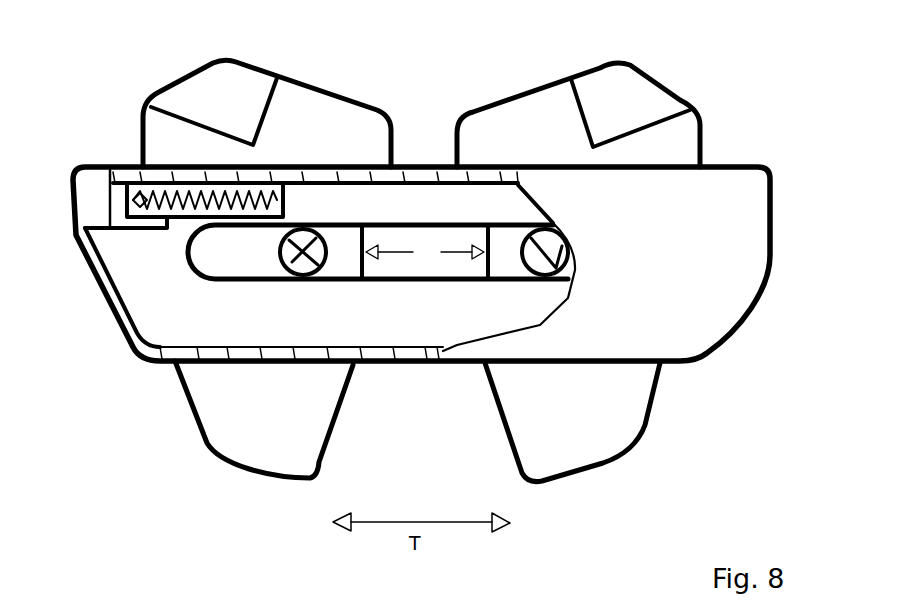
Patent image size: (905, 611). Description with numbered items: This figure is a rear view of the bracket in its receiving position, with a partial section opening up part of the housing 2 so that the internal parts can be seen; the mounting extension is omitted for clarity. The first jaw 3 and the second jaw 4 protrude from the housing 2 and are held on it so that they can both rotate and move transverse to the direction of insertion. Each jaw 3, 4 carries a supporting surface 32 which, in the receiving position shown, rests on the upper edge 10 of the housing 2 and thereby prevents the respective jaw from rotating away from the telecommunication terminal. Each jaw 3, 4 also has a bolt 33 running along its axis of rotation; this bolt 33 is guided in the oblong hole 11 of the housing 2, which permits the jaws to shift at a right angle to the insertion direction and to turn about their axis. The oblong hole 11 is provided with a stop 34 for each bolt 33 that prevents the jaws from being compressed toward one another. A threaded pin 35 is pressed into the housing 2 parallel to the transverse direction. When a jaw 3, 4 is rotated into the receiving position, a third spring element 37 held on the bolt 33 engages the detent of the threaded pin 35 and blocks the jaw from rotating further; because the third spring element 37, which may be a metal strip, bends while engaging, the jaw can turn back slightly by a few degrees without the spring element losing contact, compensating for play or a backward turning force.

The housing 2 is at (96, 181).
The first jaw 3 is at (564, 427).
The second jaw 4 is at (284, 425).
The upper edge 10 is at (422, 138).
The oblong hole 11 is at (237, 263).
The supporting surface 32 is at (180, 132).
The bolt 33 is at (280, 264).
The stop 34 is at (425, 252).
The threaded pin 35 is at (163, 228).
The third spring element 37 is at (295, 235).